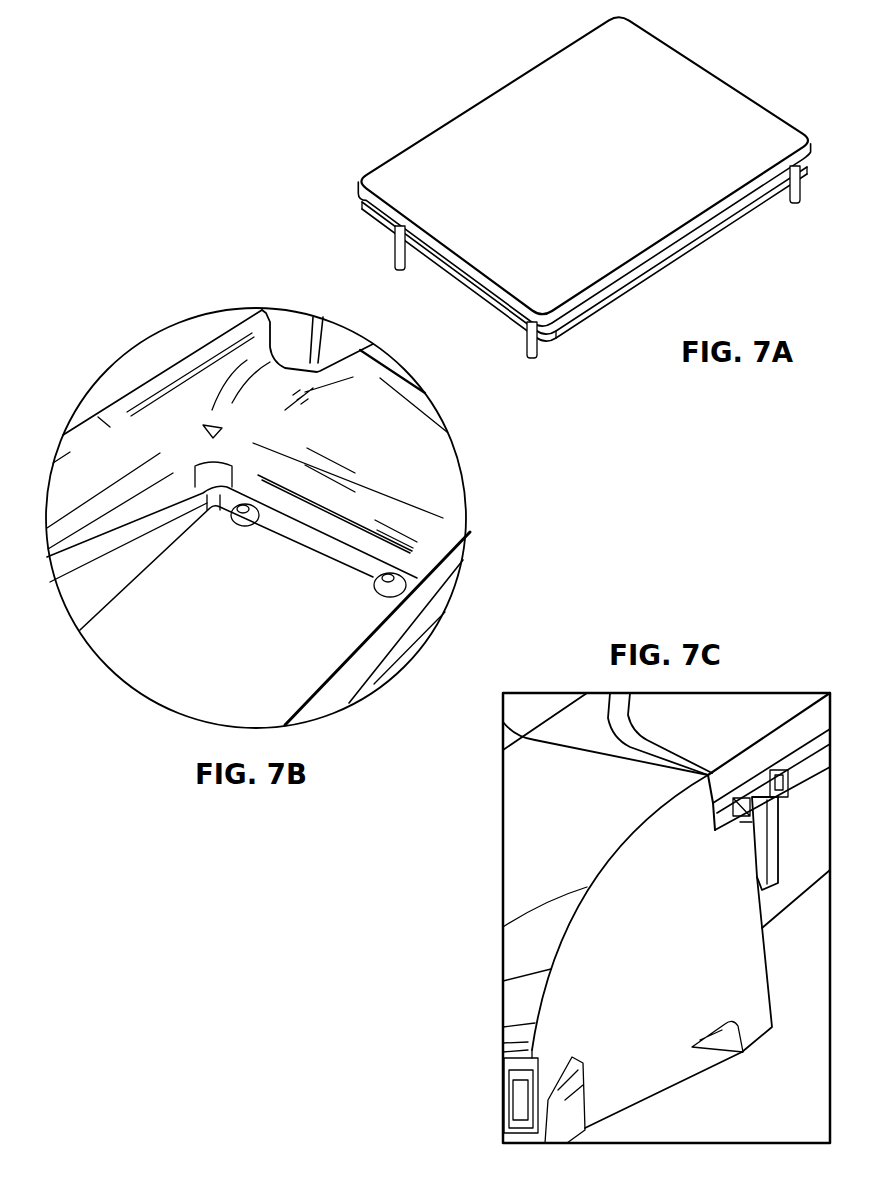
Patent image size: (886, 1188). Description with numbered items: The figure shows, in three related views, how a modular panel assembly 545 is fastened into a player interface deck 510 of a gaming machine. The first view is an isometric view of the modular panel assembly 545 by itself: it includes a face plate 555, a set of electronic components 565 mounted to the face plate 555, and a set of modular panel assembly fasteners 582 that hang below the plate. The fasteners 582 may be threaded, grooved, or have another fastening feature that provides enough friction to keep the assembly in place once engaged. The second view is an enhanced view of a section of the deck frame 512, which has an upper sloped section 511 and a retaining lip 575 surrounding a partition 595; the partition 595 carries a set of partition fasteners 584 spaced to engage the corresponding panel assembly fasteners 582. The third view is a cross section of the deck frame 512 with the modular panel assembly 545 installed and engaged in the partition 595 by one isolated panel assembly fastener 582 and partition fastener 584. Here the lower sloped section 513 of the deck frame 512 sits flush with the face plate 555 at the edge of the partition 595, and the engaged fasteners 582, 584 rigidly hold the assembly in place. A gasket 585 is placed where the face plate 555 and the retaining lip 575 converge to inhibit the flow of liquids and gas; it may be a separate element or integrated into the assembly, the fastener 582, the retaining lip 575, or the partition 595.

In FIG. 7C, the deck 510 is at (525, 712).
In FIG. 7B, the upper sloped section 511 is at (442, 470).
In FIG. 7B, the deck frame 512 is at (153, 358).
In FIG. 7C, the deck frame 512 is at (510, 740).
In FIG. 7C, the lower sloped section 513 is at (597, 820).
In FIG. 7A, the modular panel assembly 545 is at (466, 78).
In FIG. 7A, the face plate 555 is at (598, 188).
In FIG. 7C, the face plate 555 is at (742, 713).
In FIG. 7A, the set of electronic components 565 is at (645, 283).
In FIG. 7C, the set of electronic components 565 is at (810, 762).
In FIG. 7B, the retaining lip 575 is at (95, 562).
In FIG. 7C, the retaining lip 575 is at (737, 822).
In FIG. 7A, the modular panel assembly fastener 582 is at (392, 258).
In FIG. 7C, the modular panel assembly fastener 582 is at (770, 865).
In FIG. 7B, the partition fastener 584 is at (245, 530).
In FIG. 7C, the partition fastener 584 is at (780, 803).
In FIG. 7C, the gasket 585 is at (723, 815).
In FIG. 7B, the partition 595 is at (217, 648).
In FIG. 7C, the partition 595 is at (803, 877).